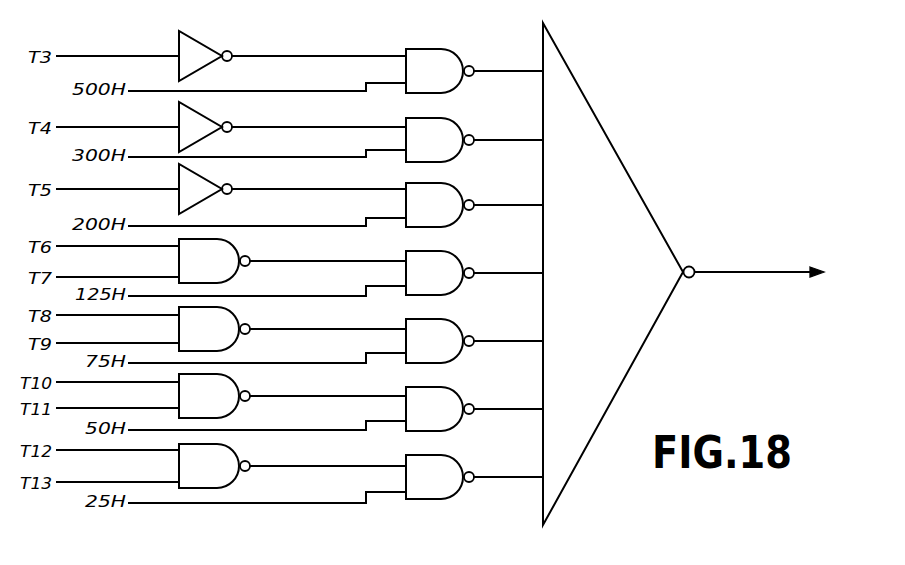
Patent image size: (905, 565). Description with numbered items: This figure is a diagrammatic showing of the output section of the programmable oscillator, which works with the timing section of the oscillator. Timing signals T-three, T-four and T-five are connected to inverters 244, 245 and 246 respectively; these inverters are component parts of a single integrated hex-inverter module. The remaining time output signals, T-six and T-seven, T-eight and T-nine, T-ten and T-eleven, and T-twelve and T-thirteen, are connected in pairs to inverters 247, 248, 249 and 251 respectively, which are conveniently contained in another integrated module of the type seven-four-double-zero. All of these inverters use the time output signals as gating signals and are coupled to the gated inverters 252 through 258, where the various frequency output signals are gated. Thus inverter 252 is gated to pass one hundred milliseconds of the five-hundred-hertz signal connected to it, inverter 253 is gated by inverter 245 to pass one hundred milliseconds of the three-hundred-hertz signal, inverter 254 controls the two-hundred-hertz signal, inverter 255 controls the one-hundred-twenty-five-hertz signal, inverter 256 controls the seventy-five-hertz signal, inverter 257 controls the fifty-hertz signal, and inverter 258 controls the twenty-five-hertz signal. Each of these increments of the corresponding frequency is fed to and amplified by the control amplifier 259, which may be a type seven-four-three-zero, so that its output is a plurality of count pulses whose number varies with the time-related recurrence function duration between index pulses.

The inverter 244 is at (206, 45).
The inverter 245 is at (206, 116).
The inverter 246 is at (206, 178).
The inverter 247 is at (237, 249).
The inverter 248 is at (237, 317).
The inverter 249 is at (237, 384).
The inverter 251 is at (237, 454).
The inverter 252 is at (464, 59).
The inverter 253 is at (464, 128).
The inverter 254 is at (464, 193).
The inverter 255 is at (464, 261).
The inverter 256 is at (464, 329).
The inverter 257 is at (464, 397).
The inverter 258 is at (464, 465).
The control amplifier 259 is at (648, 208).